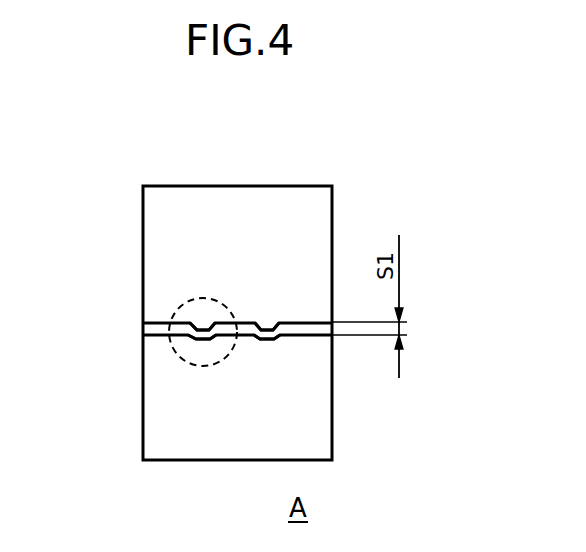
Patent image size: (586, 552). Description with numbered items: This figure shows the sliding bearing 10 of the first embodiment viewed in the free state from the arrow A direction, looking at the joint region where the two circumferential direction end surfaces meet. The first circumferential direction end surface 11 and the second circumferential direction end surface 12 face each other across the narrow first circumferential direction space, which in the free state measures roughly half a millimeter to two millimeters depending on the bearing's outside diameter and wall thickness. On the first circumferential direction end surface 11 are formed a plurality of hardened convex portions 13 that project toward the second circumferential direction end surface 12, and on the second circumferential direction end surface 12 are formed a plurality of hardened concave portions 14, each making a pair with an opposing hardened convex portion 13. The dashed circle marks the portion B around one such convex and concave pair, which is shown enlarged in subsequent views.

The plate member 10 is at (296, 160).
The first circumferential direction end surface 11 is at (143, 324).
The second circumferential direction end surface 12 is at (143, 335).
The hardened convex portion 13 is at (204, 318).
The hardened concave portion 14 is at (203, 340).
The portion B is at (180, 298).